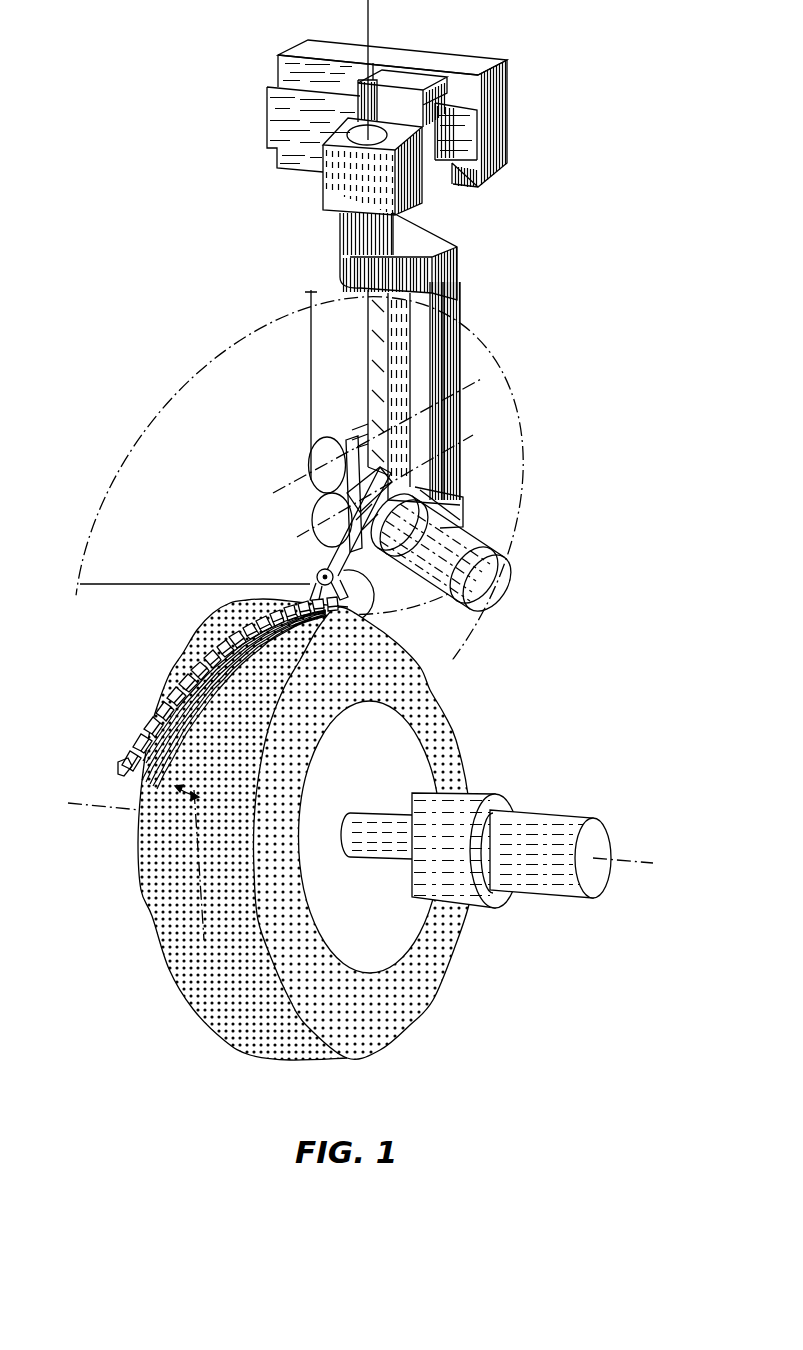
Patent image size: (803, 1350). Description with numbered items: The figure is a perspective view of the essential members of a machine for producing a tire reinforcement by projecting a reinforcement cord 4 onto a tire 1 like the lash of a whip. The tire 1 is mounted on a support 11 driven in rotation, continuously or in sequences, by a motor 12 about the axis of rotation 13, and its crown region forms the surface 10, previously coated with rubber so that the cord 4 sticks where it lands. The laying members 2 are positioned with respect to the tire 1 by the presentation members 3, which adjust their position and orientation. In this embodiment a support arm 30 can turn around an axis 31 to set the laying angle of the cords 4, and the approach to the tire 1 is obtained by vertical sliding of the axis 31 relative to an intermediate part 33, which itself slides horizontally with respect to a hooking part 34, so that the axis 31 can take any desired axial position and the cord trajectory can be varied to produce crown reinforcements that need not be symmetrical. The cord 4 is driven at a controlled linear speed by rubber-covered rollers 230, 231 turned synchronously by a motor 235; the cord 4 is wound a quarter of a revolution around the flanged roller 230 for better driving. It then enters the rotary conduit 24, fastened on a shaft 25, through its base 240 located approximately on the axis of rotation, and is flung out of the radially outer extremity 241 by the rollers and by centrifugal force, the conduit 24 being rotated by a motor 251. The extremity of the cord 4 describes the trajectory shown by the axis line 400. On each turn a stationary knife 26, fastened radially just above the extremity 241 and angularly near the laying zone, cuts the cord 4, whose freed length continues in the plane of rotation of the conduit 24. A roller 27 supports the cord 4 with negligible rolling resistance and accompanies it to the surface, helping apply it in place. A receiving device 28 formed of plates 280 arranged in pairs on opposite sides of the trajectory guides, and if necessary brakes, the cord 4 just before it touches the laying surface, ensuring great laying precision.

The tire 1 is at (586, 713).
The laying members 2 is at (578, 464).
The presentation members 3 is at (576, 103).
The reinforcement cord 4 is at (311, 342).
The surface 10 is at (241, 1025).
The support 11 is at (475, 790).
The motor 12 is at (537, 812).
The axis of rotation 13 is at (652, 864).
The rotary conduit 24 is at (340, 527).
The shaft 25 is at (448, 500).
The stationary knife 26 is at (379, 619).
The roller 27 is at (318, 577).
The device for receiving the reinforcement cord 28 is at (132, 745).
The support arm 30 is at (444, 268).
The axis 31 is at (370, 33).
The intermediate part 33 is at (447, 98).
The hooking part 34 is at (500, 153).
The roller 230 is at (320, 457).
The roller 231 is at (317, 515).
The motor 235 is at (353, 427).
The base 240 is at (347, 440).
The radially outer extremity 241 is at (365, 572).
The motor 251 is at (497, 581).
The plates 280 is at (123, 770).
The axis line 400 is at (160, 408).